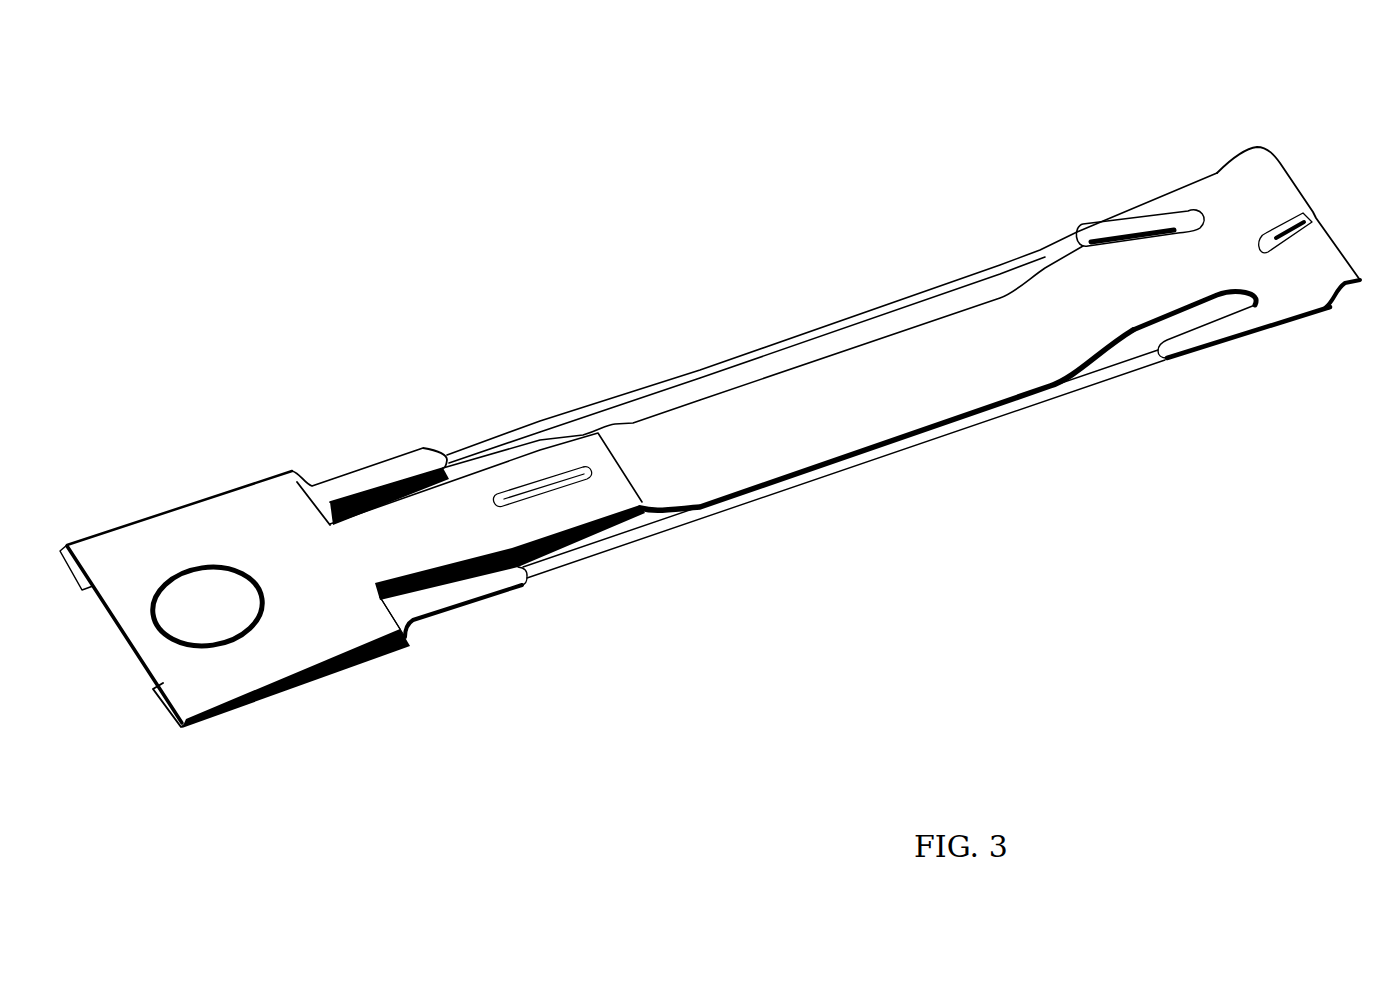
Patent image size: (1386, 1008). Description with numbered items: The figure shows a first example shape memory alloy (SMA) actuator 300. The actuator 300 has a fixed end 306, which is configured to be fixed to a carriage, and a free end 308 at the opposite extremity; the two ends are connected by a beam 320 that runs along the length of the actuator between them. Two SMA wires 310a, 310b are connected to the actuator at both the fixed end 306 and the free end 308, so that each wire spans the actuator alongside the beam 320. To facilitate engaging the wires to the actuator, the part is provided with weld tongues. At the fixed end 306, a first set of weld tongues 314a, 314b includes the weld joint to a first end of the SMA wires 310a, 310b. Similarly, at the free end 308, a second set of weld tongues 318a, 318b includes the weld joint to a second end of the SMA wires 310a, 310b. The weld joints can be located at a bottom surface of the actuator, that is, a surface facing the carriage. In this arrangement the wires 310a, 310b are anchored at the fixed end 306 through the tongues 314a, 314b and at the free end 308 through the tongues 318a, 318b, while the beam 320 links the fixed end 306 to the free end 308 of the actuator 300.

The SMA actuator 300 is at (842, 118).
The fixed end 306 is at (182, 418).
The free end 308 is at (1313, 137).
The SMA wire 310a is at (702, 342).
The SMA wire 310b is at (850, 488).
The weld tongue 314a is at (387, 427).
The weld tongue 314b is at (445, 636).
The weld tongue 318a is at (1123, 175).
The weld tongue 318b is at (1215, 373).
The beam 320 is at (910, 304).